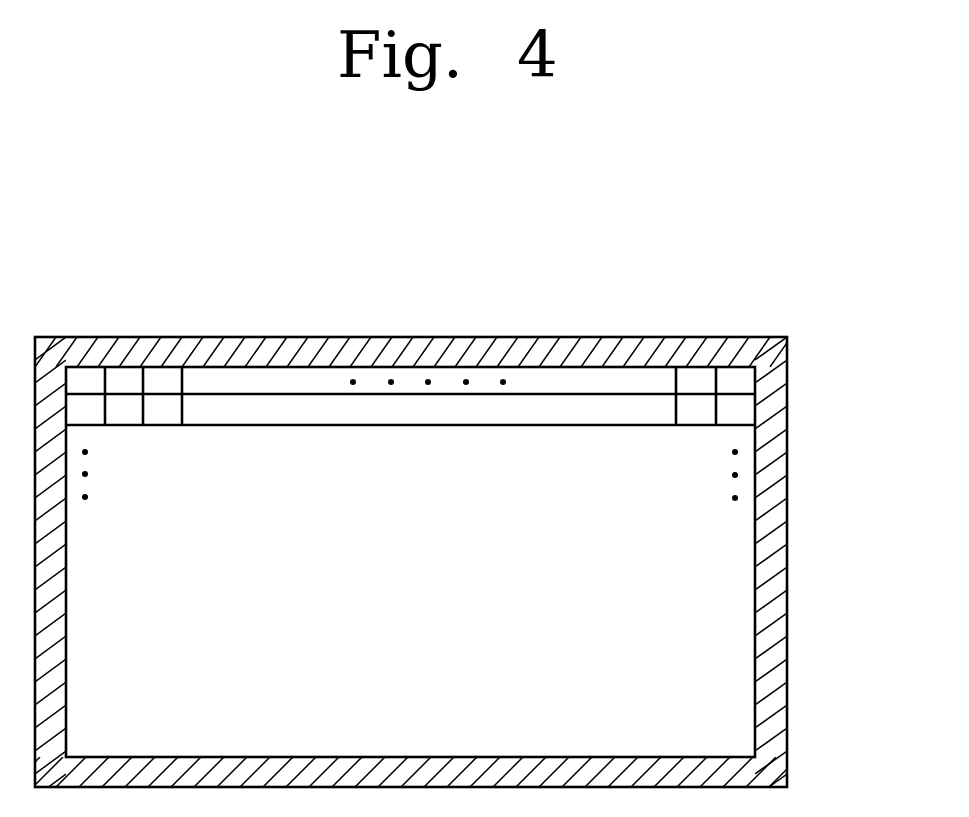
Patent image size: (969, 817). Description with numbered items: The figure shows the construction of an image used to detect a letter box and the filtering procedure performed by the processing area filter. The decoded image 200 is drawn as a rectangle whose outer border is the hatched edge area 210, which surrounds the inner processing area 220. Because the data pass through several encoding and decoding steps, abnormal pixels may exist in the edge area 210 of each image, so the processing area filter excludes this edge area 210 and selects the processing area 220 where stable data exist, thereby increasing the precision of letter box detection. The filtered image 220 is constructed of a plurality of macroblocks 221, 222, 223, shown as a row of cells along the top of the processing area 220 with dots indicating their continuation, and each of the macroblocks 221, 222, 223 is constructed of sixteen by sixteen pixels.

The decoded image 200 is at (635, 337).
The edge area 210 is at (778, 480).
The processing area 220 is at (693, 603).
The macroblock 221 is at (85, 375).
The macroblock 222 is at (125, 375).
The macroblock 223 is at (163, 375).